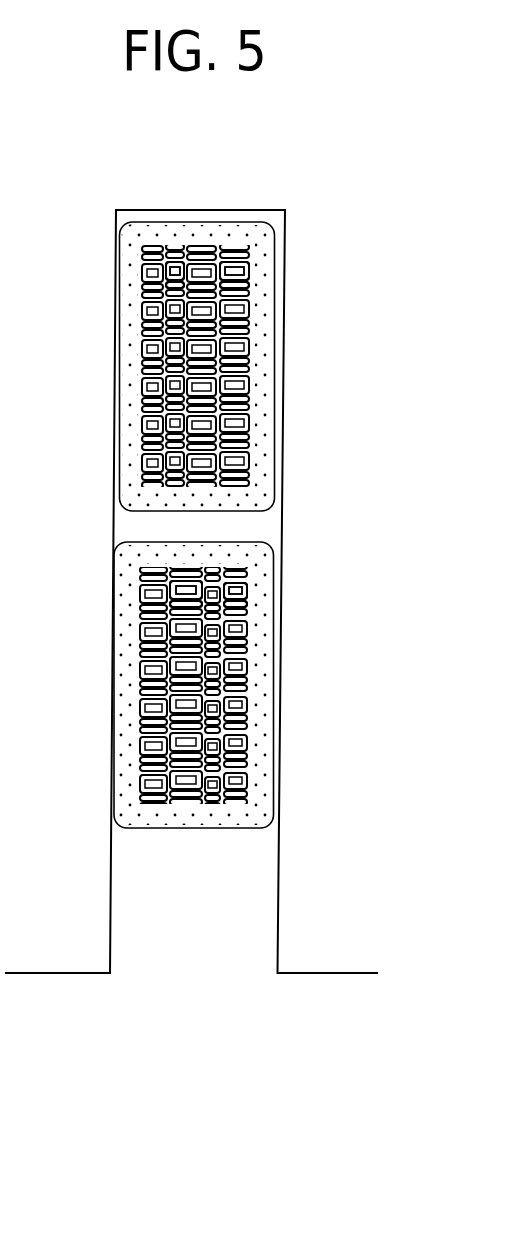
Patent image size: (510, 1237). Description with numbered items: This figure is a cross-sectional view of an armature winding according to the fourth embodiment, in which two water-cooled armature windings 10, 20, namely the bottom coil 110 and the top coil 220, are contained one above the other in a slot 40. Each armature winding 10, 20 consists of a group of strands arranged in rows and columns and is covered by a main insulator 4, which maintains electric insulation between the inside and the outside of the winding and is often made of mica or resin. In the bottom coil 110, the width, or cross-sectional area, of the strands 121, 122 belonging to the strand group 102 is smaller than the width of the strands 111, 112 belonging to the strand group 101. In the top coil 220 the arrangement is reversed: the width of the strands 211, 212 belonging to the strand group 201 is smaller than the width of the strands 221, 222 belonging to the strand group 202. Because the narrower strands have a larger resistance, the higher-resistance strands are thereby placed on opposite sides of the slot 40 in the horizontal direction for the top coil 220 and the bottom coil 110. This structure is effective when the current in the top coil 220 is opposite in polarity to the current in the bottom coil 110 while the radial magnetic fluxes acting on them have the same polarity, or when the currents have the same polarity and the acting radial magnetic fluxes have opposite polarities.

The main insulator 4 is at (270, 363).
The armature winding 10 is at (197, 329).
The armature winding 20 is at (192, 725).
The slot 40 is at (194, 950).
The strand group 101 is at (295, 316).
The strand group 102 is at (129, 316).
The bottom coil 110 is at (128, 420).
The strand 111 is at (247, 268).
The strand 112 is at (247, 285).
The strand 121 is at (172, 268).
The strand 122 is at (172, 285).
The strand group 201 is at (215, 808).
The strand group 202 is at (162, 806).
The strand 211 is at (245, 589).
The strand 212 is at (245, 605).
The top coil 220 is at (122, 724).
The strand 221 is at (176, 570).
The strand 222 is at (176, 604).